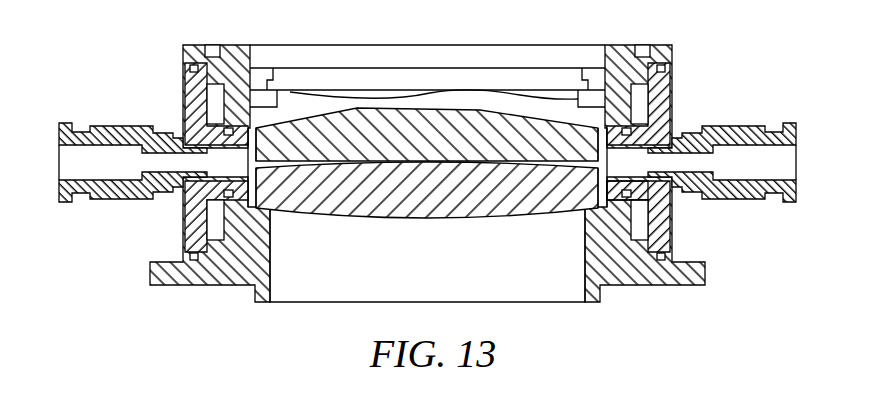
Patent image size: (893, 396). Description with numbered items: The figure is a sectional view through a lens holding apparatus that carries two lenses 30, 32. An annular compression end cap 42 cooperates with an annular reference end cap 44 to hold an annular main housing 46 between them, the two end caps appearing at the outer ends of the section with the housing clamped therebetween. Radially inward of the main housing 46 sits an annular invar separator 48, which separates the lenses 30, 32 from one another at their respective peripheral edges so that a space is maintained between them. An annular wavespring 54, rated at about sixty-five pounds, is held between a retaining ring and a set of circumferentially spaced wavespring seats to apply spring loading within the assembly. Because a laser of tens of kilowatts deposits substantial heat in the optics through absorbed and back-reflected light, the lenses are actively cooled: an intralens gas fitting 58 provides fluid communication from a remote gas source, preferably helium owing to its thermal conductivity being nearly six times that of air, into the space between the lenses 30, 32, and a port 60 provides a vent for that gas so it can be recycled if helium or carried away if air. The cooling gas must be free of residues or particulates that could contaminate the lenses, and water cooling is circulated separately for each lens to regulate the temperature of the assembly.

The lens 30 is at (449, 203).
The lens 32 is at (412, 127).
The annular compression end cap 42 is at (229, 44).
The annular reference end cap 44 is at (233, 267).
The annular main housing 46 is at (188, 219).
The annular invar separator 48 is at (250, 188).
The annular wavespring 54 is at (513, 66).
The intralens gas fitting 58 is at (116, 124).
The port 60 is at (652, 190).